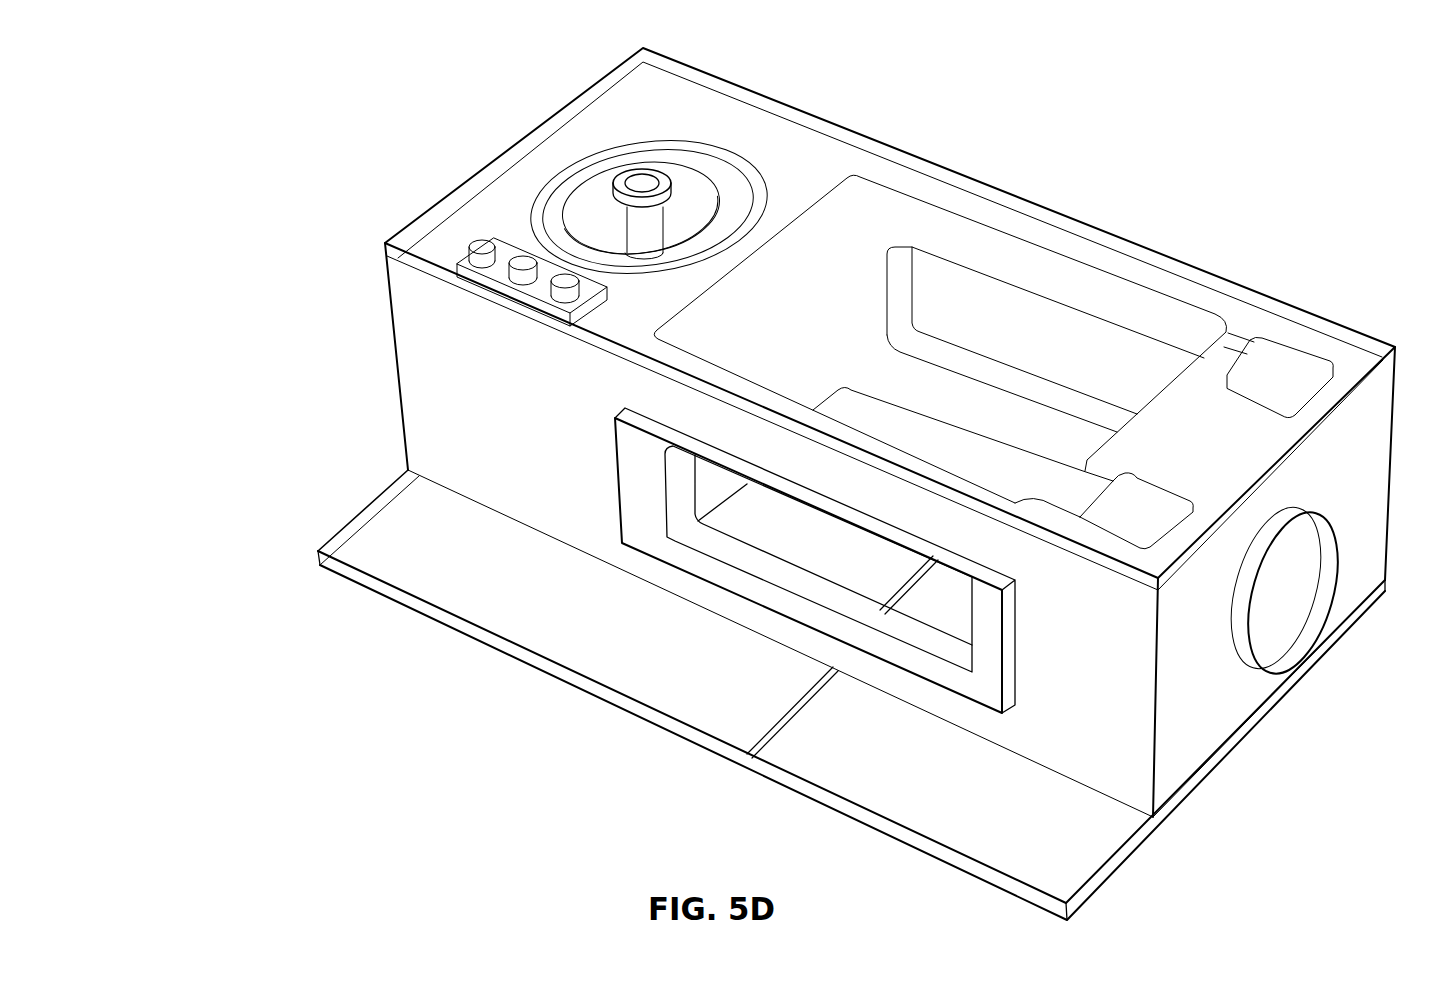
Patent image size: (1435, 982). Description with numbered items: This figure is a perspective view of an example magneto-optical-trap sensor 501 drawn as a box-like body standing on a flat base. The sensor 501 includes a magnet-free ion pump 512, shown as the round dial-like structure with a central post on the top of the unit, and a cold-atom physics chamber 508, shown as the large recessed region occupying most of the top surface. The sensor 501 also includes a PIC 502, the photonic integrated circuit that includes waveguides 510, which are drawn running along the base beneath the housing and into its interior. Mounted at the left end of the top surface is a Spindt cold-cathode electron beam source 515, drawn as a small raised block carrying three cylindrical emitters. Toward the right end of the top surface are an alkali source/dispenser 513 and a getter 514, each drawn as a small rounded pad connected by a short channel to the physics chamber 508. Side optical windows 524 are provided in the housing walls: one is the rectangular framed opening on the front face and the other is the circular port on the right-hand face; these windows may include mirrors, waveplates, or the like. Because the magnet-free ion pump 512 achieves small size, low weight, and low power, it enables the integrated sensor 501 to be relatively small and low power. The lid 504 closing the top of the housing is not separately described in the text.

The sensor 501 is at (118, 100).
The PIC 502 is at (298, 466).
The lid 504 is at (333, 292).
The cold-atom physics chamber 508 is at (985, 258).
The waveguides 510 is at (697, 806).
The magnet-free ion pump 512 is at (683, 173).
The alkali source/dispenser 513 is at (1278, 375).
The getter 514 is at (1137, 507).
The Spindt cold-cathode electron beam source 515 is at (505, 245).
The side optical windows 524 is at (752, 568).